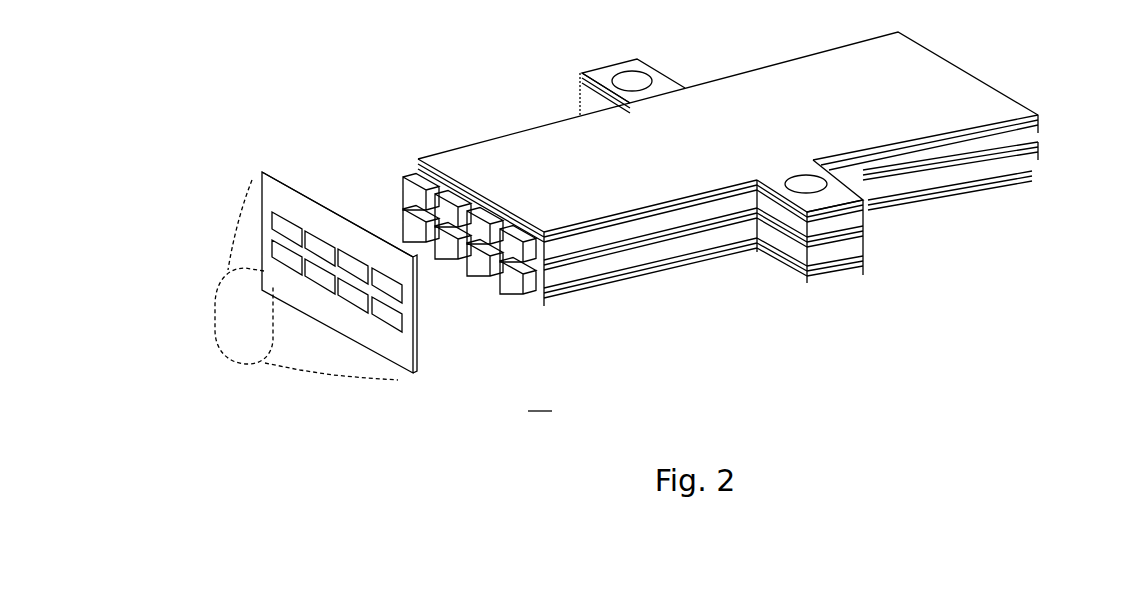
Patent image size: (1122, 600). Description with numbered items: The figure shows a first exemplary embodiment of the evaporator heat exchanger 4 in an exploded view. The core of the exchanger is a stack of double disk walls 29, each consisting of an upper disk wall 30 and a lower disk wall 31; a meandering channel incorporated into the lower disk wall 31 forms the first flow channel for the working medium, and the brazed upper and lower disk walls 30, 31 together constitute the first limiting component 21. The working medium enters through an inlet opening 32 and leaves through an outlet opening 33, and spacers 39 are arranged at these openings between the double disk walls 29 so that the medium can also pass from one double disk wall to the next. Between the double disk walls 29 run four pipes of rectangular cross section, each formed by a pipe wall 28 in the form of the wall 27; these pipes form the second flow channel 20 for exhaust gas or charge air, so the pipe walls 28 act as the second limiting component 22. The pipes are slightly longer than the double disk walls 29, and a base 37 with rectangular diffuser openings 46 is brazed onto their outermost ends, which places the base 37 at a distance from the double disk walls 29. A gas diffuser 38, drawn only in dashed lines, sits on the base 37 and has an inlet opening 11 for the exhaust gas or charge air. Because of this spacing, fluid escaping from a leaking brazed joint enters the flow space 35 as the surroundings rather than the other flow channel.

The evaporator heat exchanger 4 is at (476, 432).
The inlet opening 11 is at (235, 329).
The second flow channel 20 is at (508, 268).
The first limiting component 21 is at (695, 183).
The second limiting component 22 is at (788, 264).
The wall 27 is at (788, 264).
The pipe wall 28 is at (552, 283).
The double disk wall 29 is at (405, 156).
The upper disk wall 30 is at (442, 167).
The lower disk wall 31 is at (413, 176).
The inlet opening 32 is at (632, 82).
The outlet opening 33 is at (827, 222).
The flow space 35 is at (539, 400).
The base 37 is at (388, 345).
The gas diffuser 38 is at (281, 366).
The spacer 39 is at (583, 98).
The diffuser opening 46 is at (261, 186).